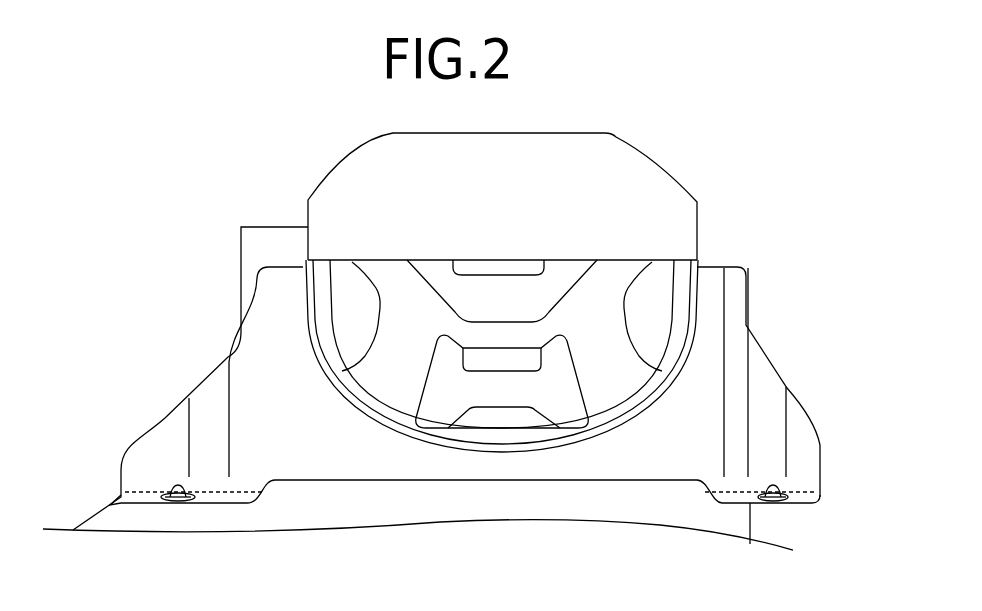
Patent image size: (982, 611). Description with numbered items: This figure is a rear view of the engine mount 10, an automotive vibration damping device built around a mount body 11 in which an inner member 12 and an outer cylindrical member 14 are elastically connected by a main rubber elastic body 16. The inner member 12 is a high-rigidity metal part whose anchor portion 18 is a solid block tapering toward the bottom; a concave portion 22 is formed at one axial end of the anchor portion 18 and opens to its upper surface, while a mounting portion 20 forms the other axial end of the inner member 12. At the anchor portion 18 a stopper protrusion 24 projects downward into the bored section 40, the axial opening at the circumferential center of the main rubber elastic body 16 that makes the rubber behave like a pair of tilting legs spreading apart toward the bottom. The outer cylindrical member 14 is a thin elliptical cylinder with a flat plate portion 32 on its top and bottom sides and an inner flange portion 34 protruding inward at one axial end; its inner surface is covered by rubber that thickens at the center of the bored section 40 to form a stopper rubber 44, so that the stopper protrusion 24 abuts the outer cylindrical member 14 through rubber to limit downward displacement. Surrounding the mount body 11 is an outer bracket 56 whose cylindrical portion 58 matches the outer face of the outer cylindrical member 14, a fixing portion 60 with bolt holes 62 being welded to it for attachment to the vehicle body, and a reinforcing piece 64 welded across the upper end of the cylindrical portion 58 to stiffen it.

The engine mount 10 is at (700, 147).
The mount body 11 is at (337, 383).
The inner member 12 is at (573, 302).
The outer cylindrical member 14 is at (612, 431).
The main rubber elastic body 16 is at (374, 324).
The anchor portion 18 is at (433, 272).
The mounting portion 20 is at (284, 243).
The concave portion 22 is at (544, 268).
The stopper protrusion 24 is at (473, 360).
The flat plate portion 32 is at (498, 438).
The inner flange portion 34 is at (377, 410).
The bored section 40 is at (581, 402).
The stopper rubber 44 is at (512, 418).
The outer bracket 56 is at (786, 376).
The cylindrical portion 58 is at (700, 288).
The fixing portion 60 is at (703, 517).
The bolt hole 62 is at (177, 485).
The reinforcing piece 64 is at (670, 227).